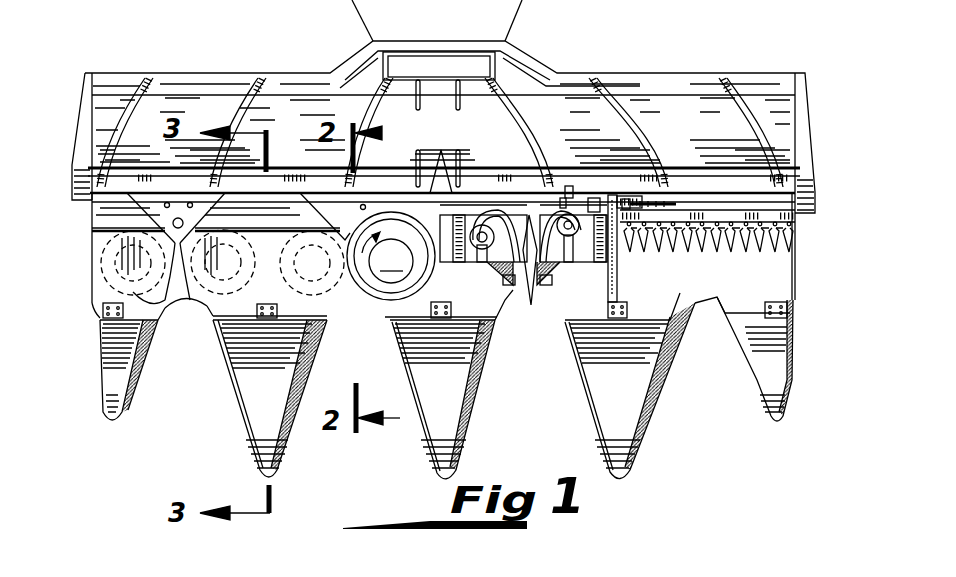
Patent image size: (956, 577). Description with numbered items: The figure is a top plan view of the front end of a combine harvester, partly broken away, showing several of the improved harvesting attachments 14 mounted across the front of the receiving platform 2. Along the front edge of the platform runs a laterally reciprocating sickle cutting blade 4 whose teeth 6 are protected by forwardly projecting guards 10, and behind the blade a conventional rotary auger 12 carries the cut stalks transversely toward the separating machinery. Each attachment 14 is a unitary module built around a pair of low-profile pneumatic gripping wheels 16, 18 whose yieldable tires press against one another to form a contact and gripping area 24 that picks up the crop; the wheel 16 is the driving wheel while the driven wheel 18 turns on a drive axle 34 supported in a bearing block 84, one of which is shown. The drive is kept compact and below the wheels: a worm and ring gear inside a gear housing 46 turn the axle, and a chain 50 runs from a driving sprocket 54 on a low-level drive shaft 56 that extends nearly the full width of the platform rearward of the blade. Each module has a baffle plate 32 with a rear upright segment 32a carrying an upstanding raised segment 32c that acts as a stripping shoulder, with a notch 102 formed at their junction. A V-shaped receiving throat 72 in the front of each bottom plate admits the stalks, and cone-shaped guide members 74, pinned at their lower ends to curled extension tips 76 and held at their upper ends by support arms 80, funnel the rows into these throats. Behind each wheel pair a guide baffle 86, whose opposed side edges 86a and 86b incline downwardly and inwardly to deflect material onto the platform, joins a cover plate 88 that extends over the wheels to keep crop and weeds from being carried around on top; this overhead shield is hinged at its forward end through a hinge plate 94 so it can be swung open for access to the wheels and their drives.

The receiving platform 2 is at (696, 84).
The cutting blade 4 is at (792, 262).
The teeth 6 is at (760, 253).
The guards 10 is at (528, 306).
The auger 12 is at (292, 91).
The harvesting attachment 14 is at (164, 340).
The rotary gripping member 16 is at (100, 264).
The rotary gripping member 18 is at (180, 298).
The contact and gripping area 24 is at (180, 262).
The baffle plate 32 is at (404, 193).
The rear baffle segment 32a is at (480, 198).
The raised segment 32c is at (441, 172).
The drive axle 34 is at (483, 266).
The gear housing 46 is at (476, 213).
The chain 50 is at (523, 249).
The driving sprocket 54 is at (622, 197).
The drive shaft 56 is at (667, 204).
The receiving throat 72 is at (464, 189).
The cone-shaped guide member 74 is at (100, 395).
The curled extension tip 76 is at (511, 292).
The support arm 80 is at (424, 306).
The bearing block 84 is at (592, 208).
The guide baffle 86 is at (95, 222).
The side edge 86a is at (336, 196).
The side edge 86b is at (227, 195).
The cover plate 88 is at (95, 292).
The hinge plate 94 is at (104, 313).
The notch 102 is at (569, 184).